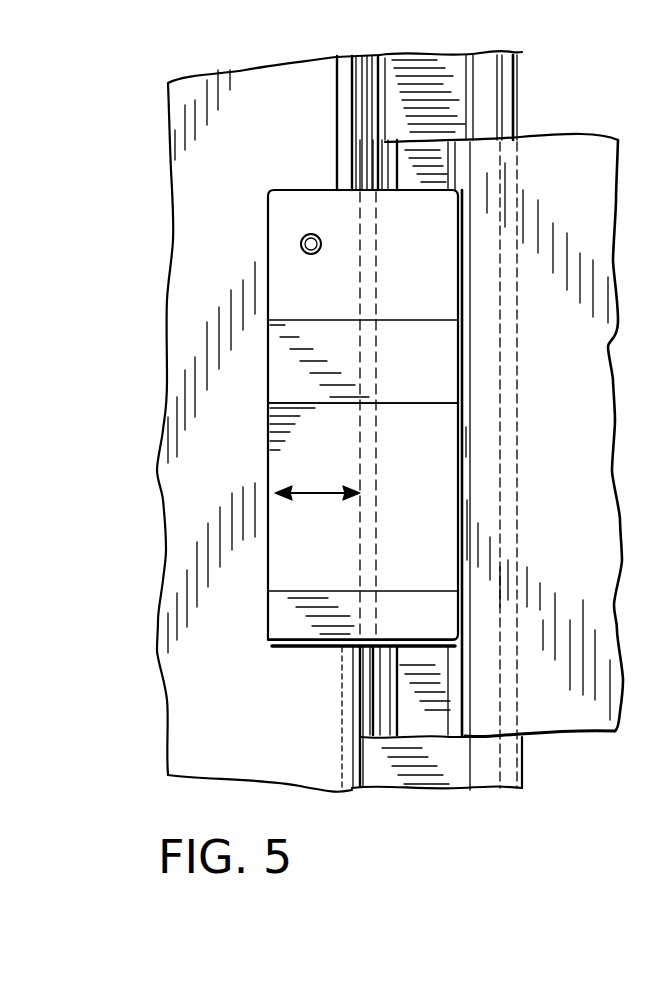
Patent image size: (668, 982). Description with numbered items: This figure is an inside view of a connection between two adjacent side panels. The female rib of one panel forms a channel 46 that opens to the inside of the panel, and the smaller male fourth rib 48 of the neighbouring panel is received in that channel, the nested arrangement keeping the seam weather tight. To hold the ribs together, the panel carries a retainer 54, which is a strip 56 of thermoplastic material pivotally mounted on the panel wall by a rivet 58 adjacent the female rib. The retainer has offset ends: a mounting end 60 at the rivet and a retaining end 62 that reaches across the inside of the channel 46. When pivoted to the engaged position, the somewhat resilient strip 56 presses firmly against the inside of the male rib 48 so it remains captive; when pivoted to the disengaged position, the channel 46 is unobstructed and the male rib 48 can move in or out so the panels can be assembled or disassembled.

The channel 46 is at (432, 92).
The fourth rib 48 is at (410, 155).
The retainer 54 is at (463, 478).
The strip 56 is at (302, 402).
The rivet 58 is at (300, 238).
The mounting end 60 is at (269, 258).
The retaining end 62 is at (283, 648).